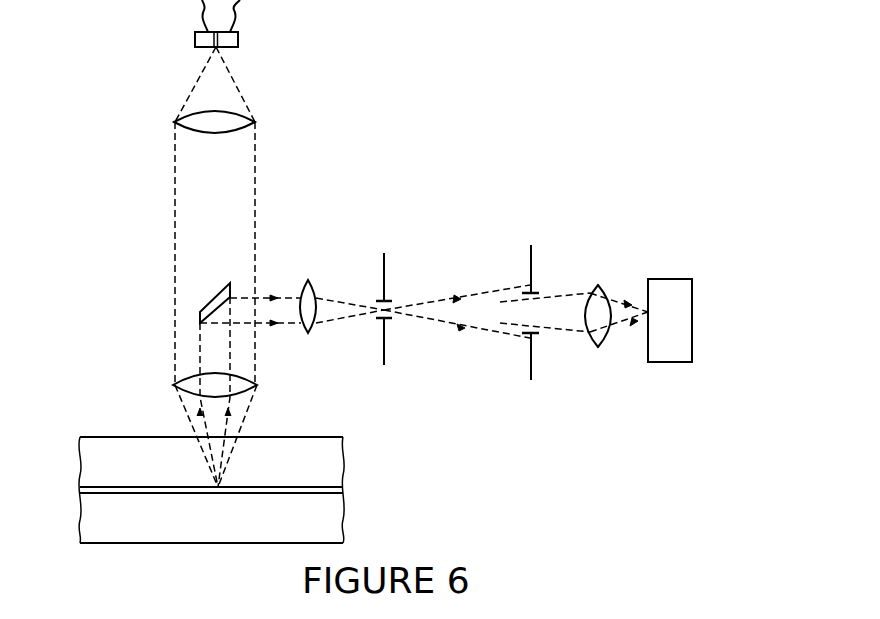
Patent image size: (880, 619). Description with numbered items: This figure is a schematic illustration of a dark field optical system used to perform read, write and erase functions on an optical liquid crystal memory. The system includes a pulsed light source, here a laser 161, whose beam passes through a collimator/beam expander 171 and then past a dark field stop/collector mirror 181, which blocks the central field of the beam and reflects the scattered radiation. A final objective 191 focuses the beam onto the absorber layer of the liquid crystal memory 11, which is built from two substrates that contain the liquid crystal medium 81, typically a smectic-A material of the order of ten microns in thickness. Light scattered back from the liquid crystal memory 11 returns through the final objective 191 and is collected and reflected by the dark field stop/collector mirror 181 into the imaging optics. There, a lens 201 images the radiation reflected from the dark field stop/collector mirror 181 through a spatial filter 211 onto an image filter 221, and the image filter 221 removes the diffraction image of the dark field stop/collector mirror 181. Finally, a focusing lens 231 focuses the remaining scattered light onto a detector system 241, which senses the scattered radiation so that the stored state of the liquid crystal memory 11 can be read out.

The laser 161 is at (240, 37).
The collimator/beam expander 171 is at (174, 122).
The dark field stop/collector mirror 181 is at (210, 302).
The final objective 191 is at (257, 385).
The lens 201 is at (308, 281).
The spatial filter 211 is at (384, 261).
The image filter 221 is at (531, 266).
The focusing lens 231 is at (598, 285).
The detector system 241 is at (680, 279).
The liquid crystal memory 11 is at (64, 438).
The liquid crystal medium 81 is at (343, 490).